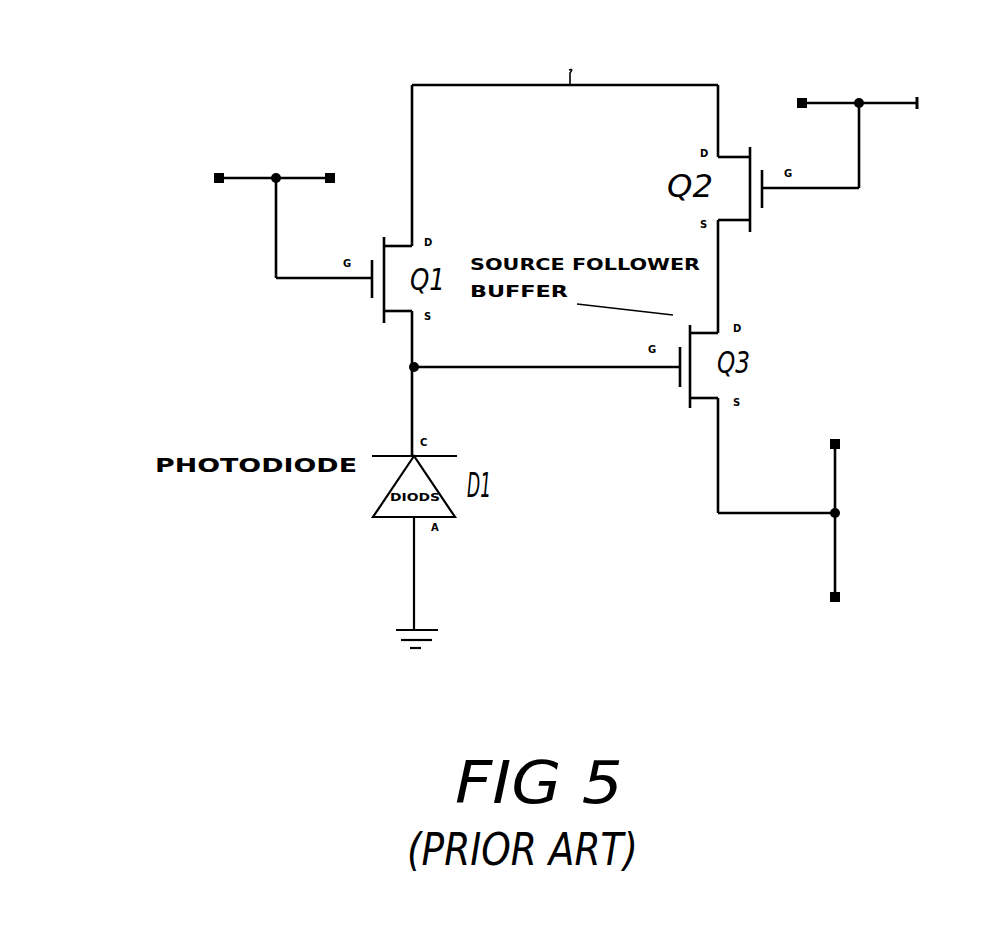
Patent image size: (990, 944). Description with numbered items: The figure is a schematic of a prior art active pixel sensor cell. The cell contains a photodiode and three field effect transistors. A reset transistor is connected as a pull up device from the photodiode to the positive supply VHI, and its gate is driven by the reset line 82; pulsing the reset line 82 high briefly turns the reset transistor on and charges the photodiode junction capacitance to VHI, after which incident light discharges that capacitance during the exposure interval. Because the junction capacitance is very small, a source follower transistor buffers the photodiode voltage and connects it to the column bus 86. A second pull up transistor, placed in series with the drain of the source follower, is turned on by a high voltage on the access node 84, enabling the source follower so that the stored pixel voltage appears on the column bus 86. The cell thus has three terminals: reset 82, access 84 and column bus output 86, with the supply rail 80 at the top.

The supply voltage (VHI) line 80 is at (487, 85).
The reset line 82 is at (276, 243).
The access node 84 is at (838, 188).
The column bus 86 is at (837, 488).